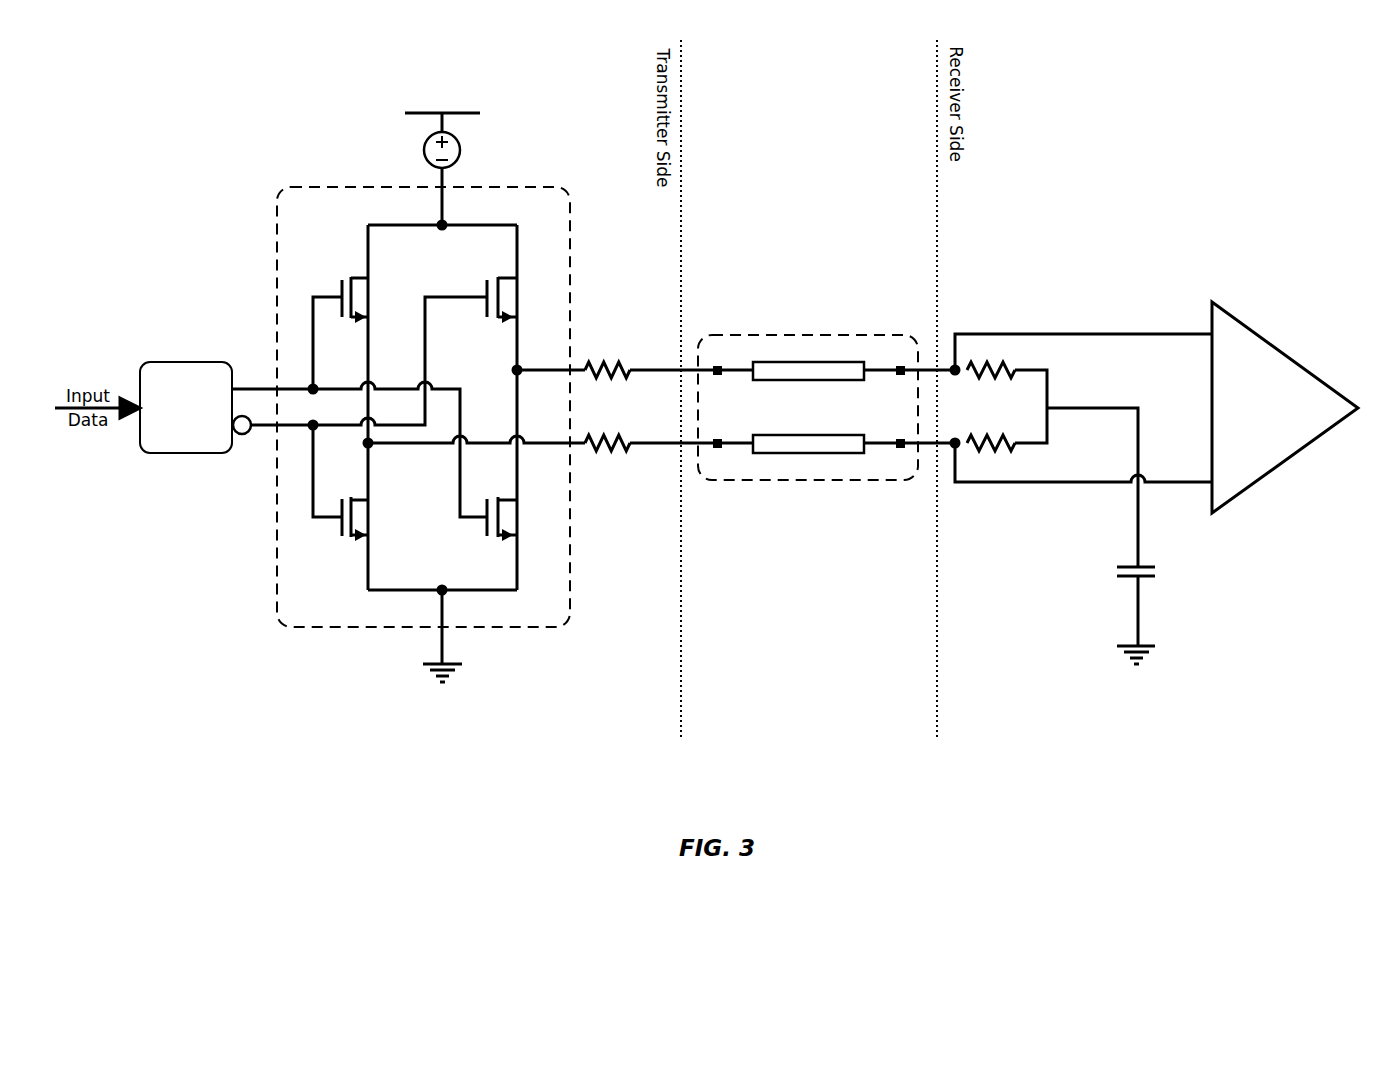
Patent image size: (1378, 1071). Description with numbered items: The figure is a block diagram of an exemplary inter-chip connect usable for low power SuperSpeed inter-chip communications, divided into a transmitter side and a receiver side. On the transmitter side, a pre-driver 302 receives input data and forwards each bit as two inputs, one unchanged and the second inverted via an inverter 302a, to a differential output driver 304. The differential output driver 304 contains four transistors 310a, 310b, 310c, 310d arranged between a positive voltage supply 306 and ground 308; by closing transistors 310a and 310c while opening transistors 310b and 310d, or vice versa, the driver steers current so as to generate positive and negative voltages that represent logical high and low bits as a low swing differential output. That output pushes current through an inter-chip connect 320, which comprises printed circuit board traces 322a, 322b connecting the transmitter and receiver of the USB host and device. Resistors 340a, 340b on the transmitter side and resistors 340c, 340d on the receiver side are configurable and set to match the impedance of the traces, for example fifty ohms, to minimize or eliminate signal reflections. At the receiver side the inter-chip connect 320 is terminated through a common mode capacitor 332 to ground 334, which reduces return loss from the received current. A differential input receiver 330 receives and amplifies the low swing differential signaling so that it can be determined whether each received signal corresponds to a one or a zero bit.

The pre-driver 302 is at (186, 407).
The inverter 302a is at (243, 444).
The differential output driver 304 is at (515, 187).
The positive voltage supply 306 is at (499, 112).
The ground 308 is at (464, 682).
The transistor 310a is at (351, 269).
The transistor 310b is at (480, 279).
The transistor 310c is at (478, 535).
The transistor 310d is at (351, 544).
The inter-chip connect 320 is at (797, 335).
The PCB trace 322a is at (851, 435).
The PCB trace 322b is at (779, 381).
The differential input receiver 330 is at (1285, 407).
The common mode capacitor 332 is at (1174, 578).
The ground 334 is at (1157, 664).
The resistor 340a is at (608, 354).
The resistor 340b is at (608, 462).
The resistor 340c is at (991, 354).
The resistor 340d is at (991, 462).